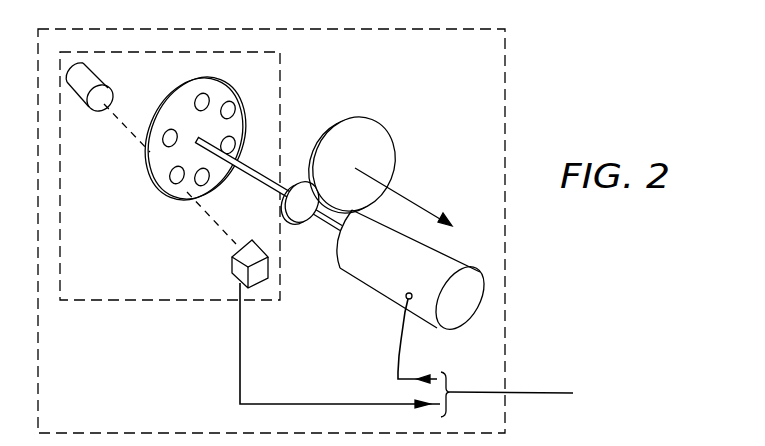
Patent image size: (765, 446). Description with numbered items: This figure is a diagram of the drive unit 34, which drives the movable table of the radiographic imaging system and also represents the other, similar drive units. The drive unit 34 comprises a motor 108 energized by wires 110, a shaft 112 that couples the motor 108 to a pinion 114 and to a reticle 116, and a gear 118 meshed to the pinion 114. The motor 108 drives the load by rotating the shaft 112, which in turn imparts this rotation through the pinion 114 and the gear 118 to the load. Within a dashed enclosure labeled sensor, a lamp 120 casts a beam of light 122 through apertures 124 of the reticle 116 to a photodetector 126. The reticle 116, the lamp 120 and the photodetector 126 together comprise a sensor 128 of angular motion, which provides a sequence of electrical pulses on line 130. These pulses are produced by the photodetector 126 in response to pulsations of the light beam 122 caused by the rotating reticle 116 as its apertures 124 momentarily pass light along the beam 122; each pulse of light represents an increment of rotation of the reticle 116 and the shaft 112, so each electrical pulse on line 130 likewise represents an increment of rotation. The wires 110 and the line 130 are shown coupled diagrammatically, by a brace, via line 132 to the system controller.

The drive unit 34 is at (507, 118).
The motor 108 is at (481, 298).
The wires 110 is at (401, 345).
The shaft 112 is at (269, 176).
The pinion 114 is at (297, 216).
The reticle 116 is at (243, 110).
The gear 118 is at (393, 146).
The lamp 120 is at (103, 84).
The beam of light 122 is at (210, 218).
The apertures 124 is at (173, 186).
The photodetector 126 is at (232, 258).
The sensor 128 is at (282, 108).
The line 130 is at (368, 407).
The line 132 is at (527, 392).